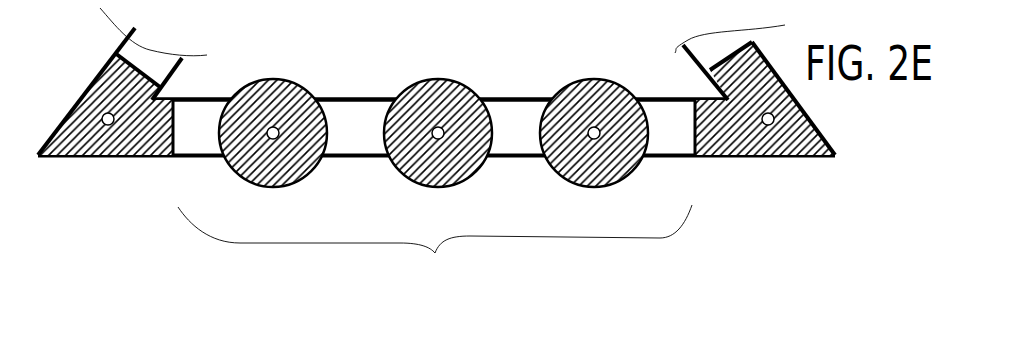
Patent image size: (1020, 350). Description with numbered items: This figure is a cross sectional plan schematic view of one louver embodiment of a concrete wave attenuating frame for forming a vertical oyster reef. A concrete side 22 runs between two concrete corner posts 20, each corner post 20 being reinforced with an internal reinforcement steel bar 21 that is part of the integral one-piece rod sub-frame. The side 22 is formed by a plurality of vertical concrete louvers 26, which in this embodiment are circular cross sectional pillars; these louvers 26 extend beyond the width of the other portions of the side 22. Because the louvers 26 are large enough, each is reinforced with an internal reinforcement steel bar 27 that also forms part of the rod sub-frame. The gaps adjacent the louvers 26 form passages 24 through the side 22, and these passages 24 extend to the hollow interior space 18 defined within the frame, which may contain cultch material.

The space 18 is at (268, 53).
The concrete corner post 20 is at (85, 99).
The internal reinforcement steel bar 21 is at (111, 128).
The concrete side 22 is at (435, 250).
The passage 24 is at (198, 123).
The louver 26 is at (303, 82).
The internal reinforcement steel bar 27 is at (256, 110).